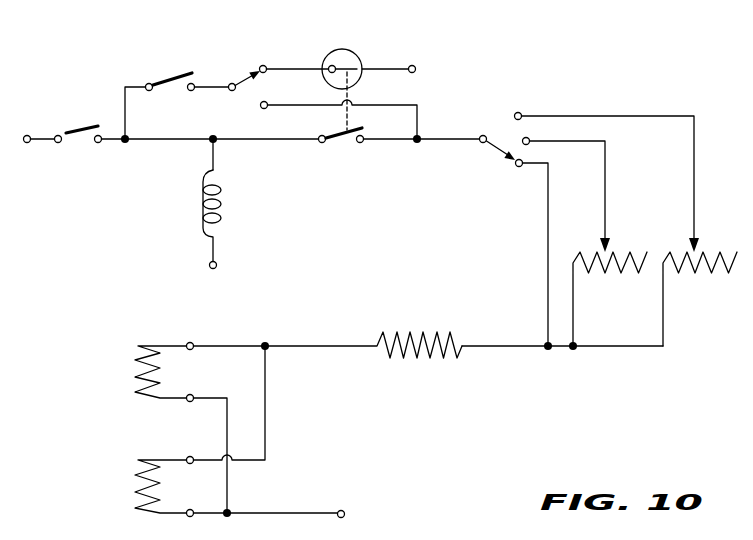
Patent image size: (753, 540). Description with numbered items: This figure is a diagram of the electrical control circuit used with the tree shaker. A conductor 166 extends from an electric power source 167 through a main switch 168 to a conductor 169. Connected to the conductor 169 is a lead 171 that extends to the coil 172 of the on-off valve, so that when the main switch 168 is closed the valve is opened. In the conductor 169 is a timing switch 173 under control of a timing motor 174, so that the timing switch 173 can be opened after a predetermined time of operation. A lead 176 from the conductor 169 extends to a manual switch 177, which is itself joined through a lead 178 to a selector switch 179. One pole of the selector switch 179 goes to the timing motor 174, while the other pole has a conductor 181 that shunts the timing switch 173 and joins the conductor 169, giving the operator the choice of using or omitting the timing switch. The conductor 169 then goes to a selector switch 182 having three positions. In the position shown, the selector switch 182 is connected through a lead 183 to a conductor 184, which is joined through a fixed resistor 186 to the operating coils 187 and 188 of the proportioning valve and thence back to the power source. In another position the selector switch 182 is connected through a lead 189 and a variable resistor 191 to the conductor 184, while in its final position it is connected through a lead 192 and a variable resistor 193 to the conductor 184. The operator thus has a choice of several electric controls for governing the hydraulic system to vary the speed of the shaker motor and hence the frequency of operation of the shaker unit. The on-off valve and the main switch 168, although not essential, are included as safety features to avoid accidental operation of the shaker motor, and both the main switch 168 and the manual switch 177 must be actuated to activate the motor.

The conductor 166 is at (43, 130).
The electric power source 167 is at (28, 144).
The main switch 168 is at (77, 142).
The conductor 169 is at (150, 142).
The lead 171 is at (216, 163).
The coil 172 is at (222, 218).
The timing switch 173 is at (334, 143).
The timing motor 174 is at (349, 52).
The lead 176 is at (125, 76).
The manual switch 177 is at (168, 75).
The lead 178 is at (216, 90).
The selector switch 179 is at (243, 73).
The conductor 181 is at (423, 88).
The selector switch 182 is at (497, 152).
The lead 183 is at (545, 252).
The conductor 184 is at (468, 348).
The fixed resistor 186 is at (425, 307).
The operating coil 187 is at (135, 360).
The operating coil 188 is at (136, 470).
The lead 189 is at (607, 200).
The variable resistor 191 is at (612, 268).
The lead 192 is at (694, 175).
The variable resistor 193 is at (698, 270).